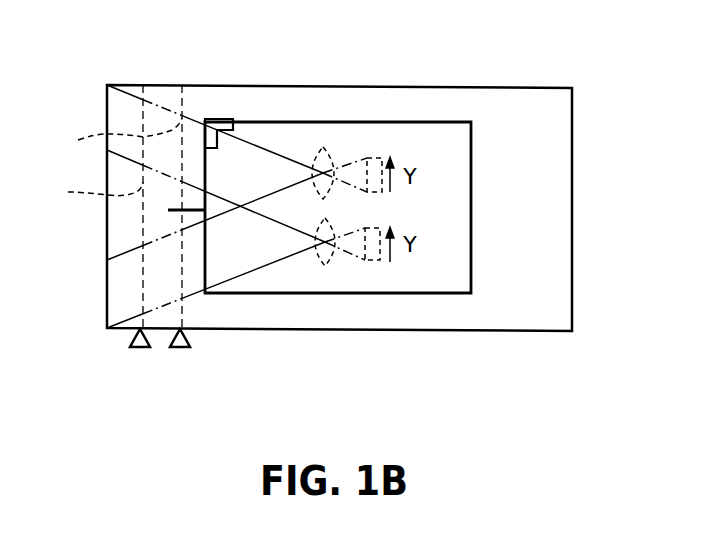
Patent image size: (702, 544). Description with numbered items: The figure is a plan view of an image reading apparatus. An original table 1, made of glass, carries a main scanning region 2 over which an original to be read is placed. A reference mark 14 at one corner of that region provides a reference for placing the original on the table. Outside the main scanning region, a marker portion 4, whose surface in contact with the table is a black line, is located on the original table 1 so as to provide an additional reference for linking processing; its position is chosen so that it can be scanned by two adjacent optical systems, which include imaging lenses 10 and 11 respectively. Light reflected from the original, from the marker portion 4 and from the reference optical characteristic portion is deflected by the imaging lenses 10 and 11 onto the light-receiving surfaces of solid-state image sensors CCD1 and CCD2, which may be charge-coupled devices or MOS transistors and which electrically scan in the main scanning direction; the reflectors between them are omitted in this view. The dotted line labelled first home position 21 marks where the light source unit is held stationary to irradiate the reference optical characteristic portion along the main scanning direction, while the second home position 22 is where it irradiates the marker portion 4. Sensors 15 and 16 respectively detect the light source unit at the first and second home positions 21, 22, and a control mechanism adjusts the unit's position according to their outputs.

The original table 1 is at (573, 147).
The main scanning region 2 is at (452, 122).
The marker portion 4 is at (174, 211).
The lens 10 is at (322, 150).
The lens 11 is at (322, 265).
The reference mark 14 is at (220, 118).
The sensor 15 is at (142, 348).
The sensor 16 is at (182, 348).
The first home position 21 is at (91, 196).
The second home position 22 is at (114, 140).
The solid-state image sensor CCD1 is at (376, 157).
The solid-state image sensor CCD2 is at (368, 262).